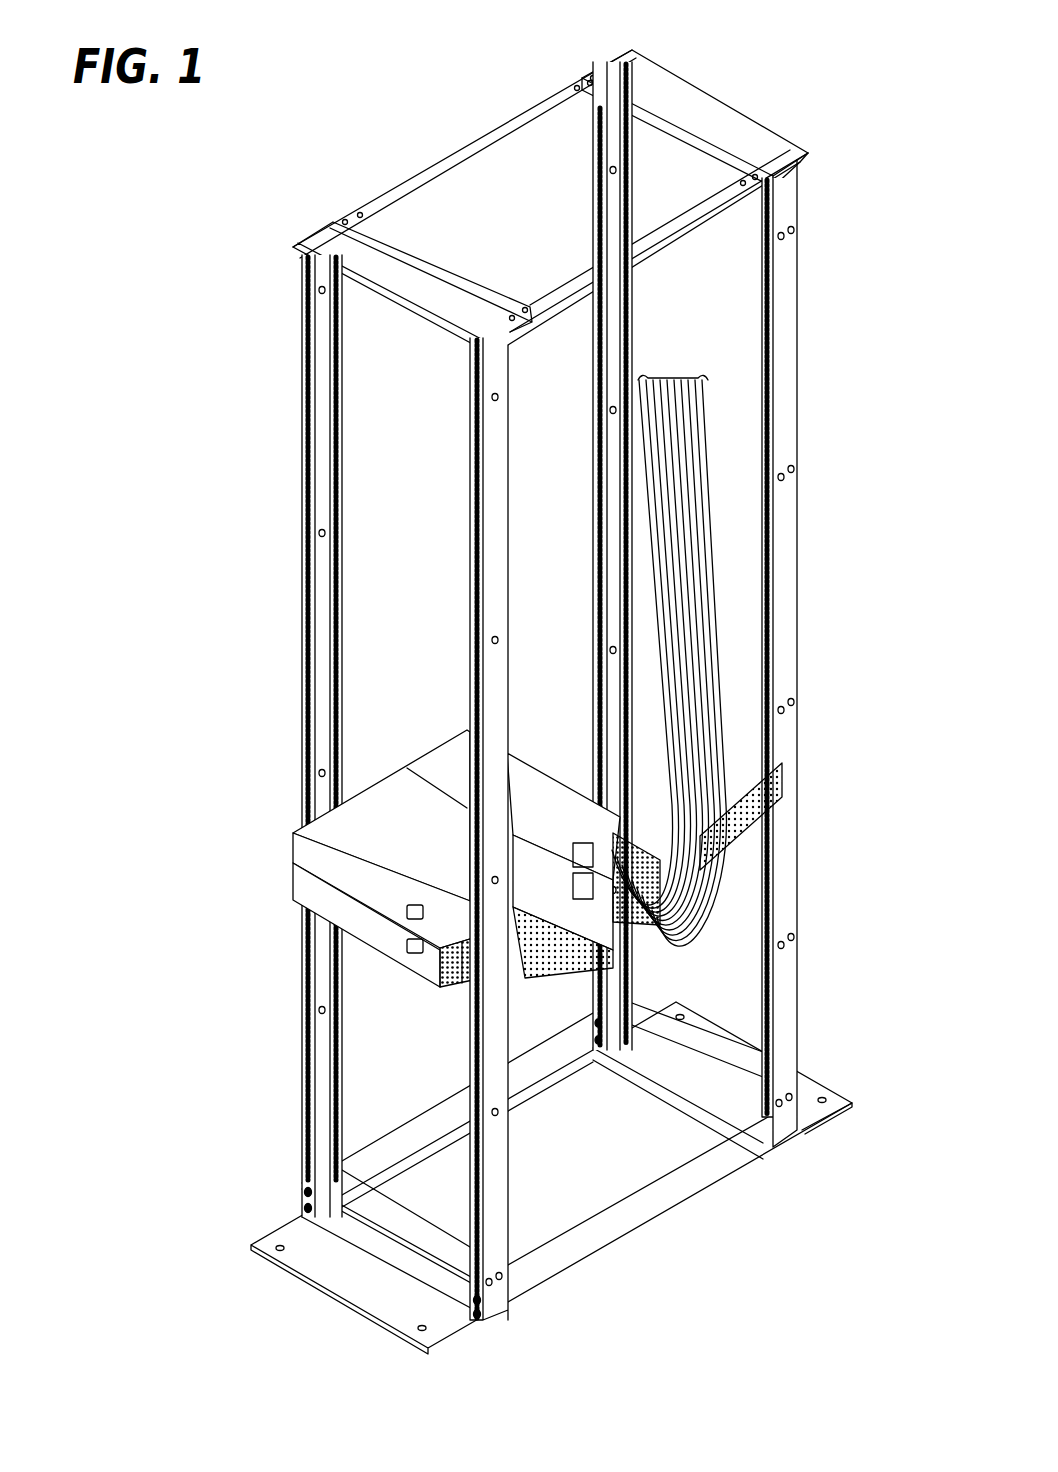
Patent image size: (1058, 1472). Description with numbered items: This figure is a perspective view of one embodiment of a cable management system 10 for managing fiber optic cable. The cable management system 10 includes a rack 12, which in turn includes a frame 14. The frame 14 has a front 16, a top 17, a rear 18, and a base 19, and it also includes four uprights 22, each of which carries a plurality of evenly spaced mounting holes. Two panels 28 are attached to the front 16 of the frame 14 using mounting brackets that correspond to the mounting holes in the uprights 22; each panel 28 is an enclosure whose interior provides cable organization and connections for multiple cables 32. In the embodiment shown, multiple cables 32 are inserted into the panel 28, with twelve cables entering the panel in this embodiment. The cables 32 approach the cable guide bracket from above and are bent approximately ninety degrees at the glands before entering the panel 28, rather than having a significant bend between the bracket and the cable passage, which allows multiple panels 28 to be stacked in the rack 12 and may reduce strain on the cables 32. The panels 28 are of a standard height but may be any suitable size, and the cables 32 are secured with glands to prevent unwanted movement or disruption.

The cable management system 10 is at (150, 338).
The rack 12 is at (798, 268).
The frame 14 is at (708, 202).
The front 16 is at (400, 605).
The top 17 is at (582, 78).
The rear 18 is at (738, 406).
The base 19 is at (440, 1322).
The uprights 22 is at (306, 498).
The panel 28 is at (362, 838).
The cables 32 is at (722, 668).